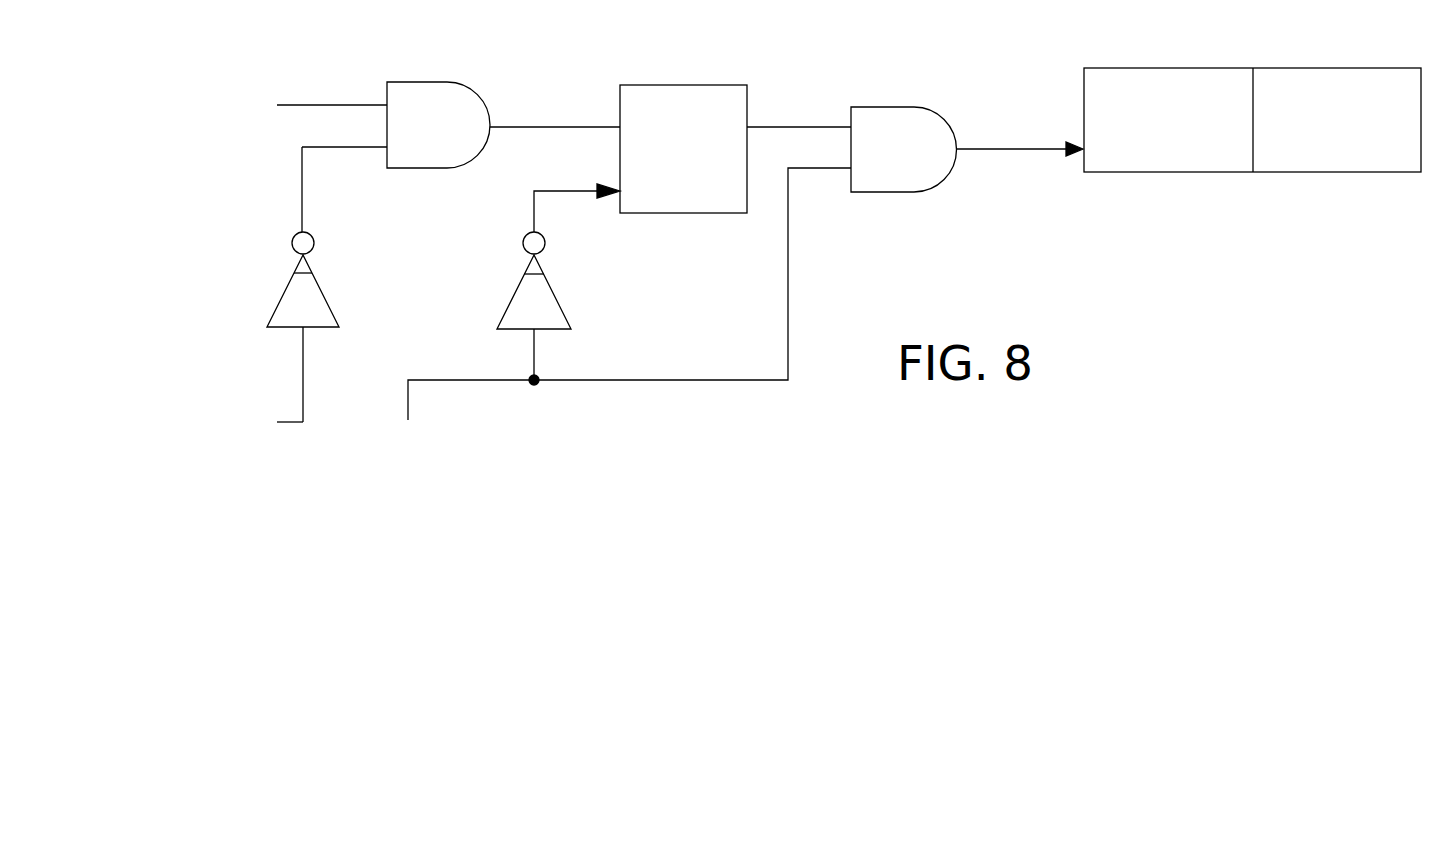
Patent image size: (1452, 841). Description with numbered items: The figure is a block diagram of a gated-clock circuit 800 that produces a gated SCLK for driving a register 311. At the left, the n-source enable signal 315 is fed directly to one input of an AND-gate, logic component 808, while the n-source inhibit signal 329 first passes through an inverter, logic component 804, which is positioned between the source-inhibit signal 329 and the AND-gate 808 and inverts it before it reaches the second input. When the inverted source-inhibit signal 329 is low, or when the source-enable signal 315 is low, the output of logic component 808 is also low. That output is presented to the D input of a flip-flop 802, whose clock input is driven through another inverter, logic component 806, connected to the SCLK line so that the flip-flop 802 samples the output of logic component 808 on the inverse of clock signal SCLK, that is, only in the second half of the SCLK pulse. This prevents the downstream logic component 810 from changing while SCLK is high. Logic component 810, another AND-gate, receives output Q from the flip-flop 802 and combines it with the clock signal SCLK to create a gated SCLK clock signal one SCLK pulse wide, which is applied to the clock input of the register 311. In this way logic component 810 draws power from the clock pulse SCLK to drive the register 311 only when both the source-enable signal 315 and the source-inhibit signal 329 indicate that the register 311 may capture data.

The source enable circuit 800 is at (1027, 235).
The n-source-enable signal 315 is at (320, 104).
The logic component 808 is at (460, 82).
The logic component 804 is at (275, 308).
The n-source-inhibit signal 329 is at (289, 423).
The logic component 806 is at (510, 307).
The flip-flop 802 is at (638, 77).
The logic component 810 is at (875, 107).
The register 311 is at (1272, 68).